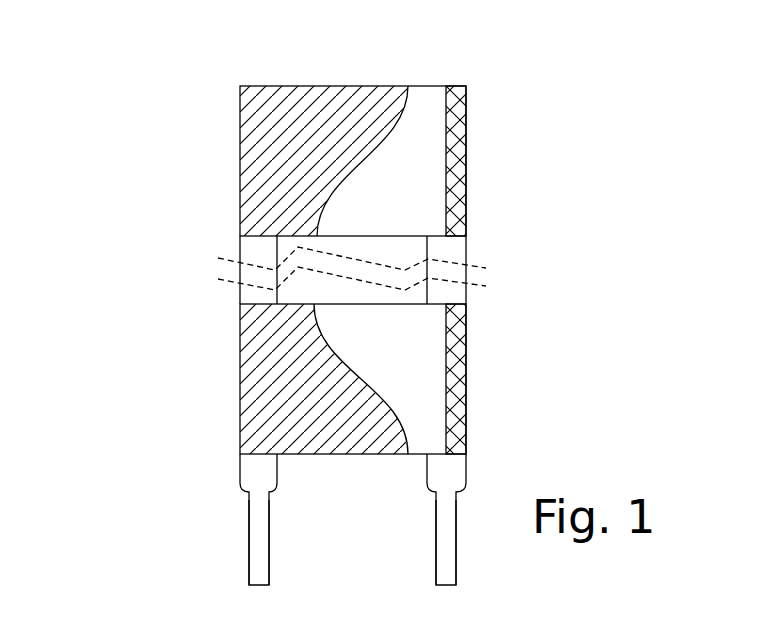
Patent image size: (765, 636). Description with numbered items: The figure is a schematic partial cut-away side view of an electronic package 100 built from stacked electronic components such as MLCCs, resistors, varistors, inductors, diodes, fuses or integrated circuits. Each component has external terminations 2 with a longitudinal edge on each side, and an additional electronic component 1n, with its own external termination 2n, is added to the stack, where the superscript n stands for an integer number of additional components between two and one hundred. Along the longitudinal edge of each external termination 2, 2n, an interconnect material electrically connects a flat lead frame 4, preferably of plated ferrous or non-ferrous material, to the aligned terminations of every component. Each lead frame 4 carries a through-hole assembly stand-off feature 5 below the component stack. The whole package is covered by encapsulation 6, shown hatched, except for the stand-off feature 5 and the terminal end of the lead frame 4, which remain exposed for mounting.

The electronic package 100 is at (303, 301).
The additional electronic component 1n is at (423, 107).
The external termination of additional electronic component 2n is at (457, 149).
The external termination 2 is at (460, 378).
The flat lead frame 4 is at (255, 294).
The through-hole assembly stand-off feature 5 is at (438, 468).
The encapsulation 6 is at (262, 118).